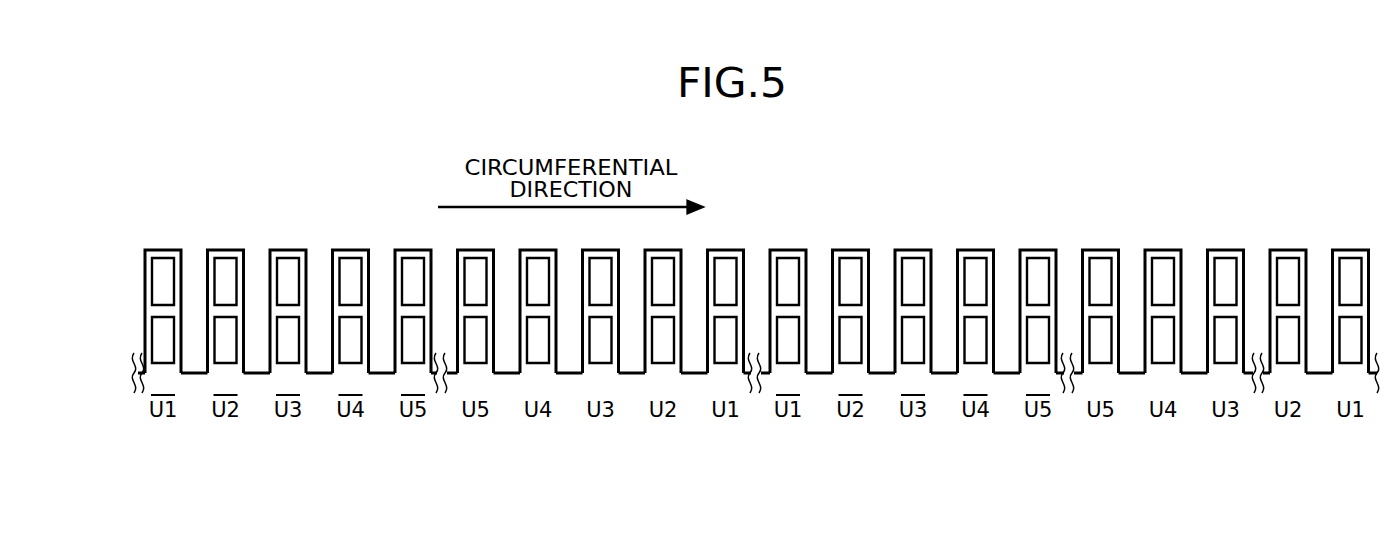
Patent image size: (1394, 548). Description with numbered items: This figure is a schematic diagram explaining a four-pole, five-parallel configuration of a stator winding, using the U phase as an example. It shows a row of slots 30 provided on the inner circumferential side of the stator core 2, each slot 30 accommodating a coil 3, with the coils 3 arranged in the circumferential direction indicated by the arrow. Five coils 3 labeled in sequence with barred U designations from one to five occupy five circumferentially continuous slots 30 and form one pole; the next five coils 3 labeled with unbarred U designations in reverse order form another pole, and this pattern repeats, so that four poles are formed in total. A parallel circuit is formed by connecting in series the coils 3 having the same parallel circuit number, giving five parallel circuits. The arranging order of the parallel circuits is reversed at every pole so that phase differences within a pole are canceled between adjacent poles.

The stator core 2 is at (146, 369).
The coil 3 is at (159, 330).
The slot 30 is at (178, 369).